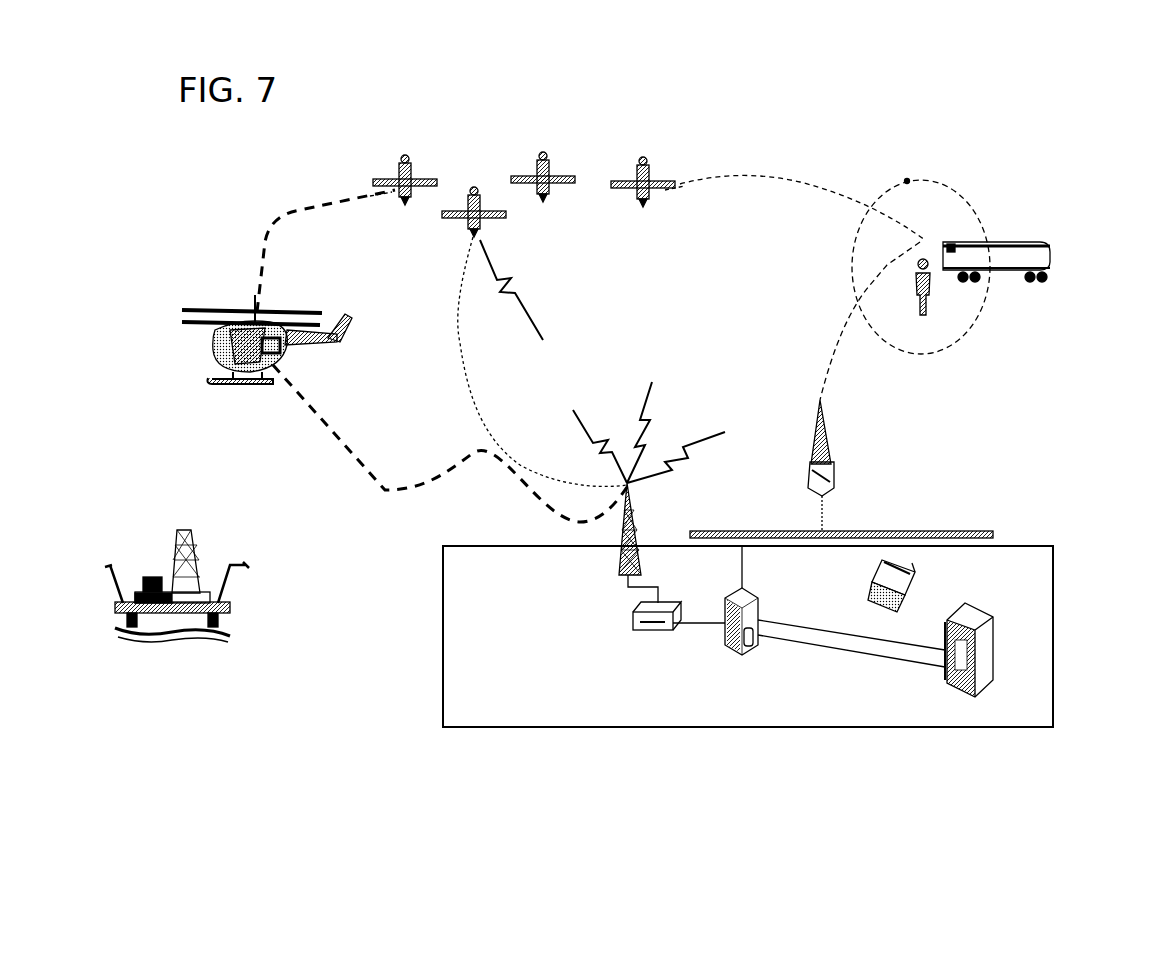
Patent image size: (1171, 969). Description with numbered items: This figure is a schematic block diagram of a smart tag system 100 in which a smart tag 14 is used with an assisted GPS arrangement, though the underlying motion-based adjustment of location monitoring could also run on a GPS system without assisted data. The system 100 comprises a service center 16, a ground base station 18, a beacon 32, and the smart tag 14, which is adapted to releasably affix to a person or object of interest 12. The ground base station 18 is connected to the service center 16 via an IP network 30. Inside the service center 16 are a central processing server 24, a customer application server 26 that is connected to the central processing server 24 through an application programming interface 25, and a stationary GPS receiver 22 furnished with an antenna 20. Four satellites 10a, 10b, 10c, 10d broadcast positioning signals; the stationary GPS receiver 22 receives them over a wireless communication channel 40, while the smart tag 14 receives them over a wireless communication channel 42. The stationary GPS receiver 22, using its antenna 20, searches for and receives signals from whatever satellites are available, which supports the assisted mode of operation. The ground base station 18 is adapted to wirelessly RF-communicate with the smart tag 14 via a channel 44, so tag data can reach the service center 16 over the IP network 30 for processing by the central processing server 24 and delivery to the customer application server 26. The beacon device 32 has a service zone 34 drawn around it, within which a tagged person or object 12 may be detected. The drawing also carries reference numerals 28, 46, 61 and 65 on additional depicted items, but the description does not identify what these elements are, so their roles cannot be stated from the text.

The smart tag system 100 is at (1063, 118).
The satellite 10a is at (410, 160).
The satellite 10b is at (477, 190).
The satellite 10c is at (550, 150).
The satellite 10d is at (648, 160).
The person or object of interest 12 is at (1035, 255).
The smart tag 14 is at (951, 243).
The service center 16 is at (513, 545).
The ground base station 18 is at (830, 460).
The antenna 20 is at (640, 530).
The stationary GPS receiver 22 is at (655, 632).
The central processing server 24 is at (735, 655).
The application programming interface 25 is at (855, 647).
The customer application server 26 is at (977, 677).
The satellite dish 28 is at (915, 570).
The IP network 30 is at (880, 530).
The beacon 32 is at (930, 300).
The service zone 34 is at (928, 177).
The wireless communication channel 40 is at (460, 333).
The wireless communication channel 42 is at (781, 178).
The channel 44 is at (870, 285).
The boundary point 46 is at (935, 212).
The helicopter 61 is at (213, 357).
The offshore platform 65 is at (207, 592).